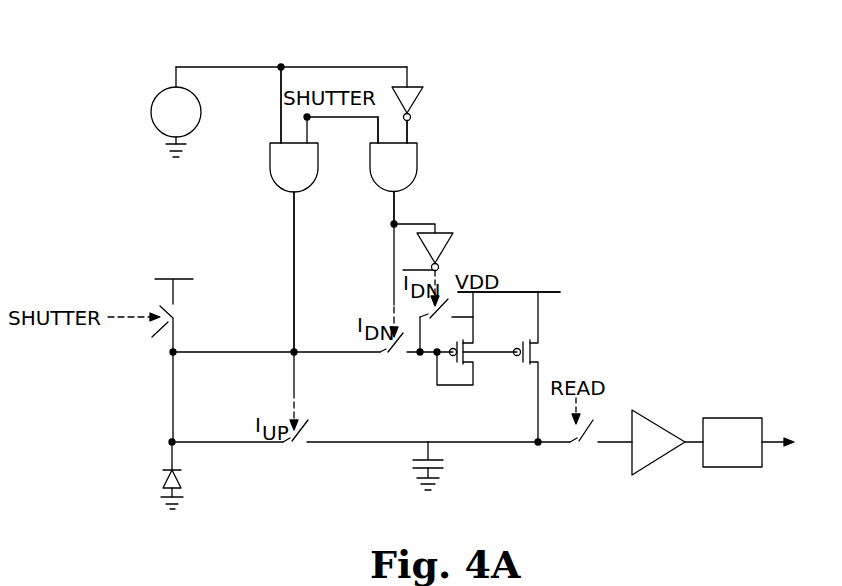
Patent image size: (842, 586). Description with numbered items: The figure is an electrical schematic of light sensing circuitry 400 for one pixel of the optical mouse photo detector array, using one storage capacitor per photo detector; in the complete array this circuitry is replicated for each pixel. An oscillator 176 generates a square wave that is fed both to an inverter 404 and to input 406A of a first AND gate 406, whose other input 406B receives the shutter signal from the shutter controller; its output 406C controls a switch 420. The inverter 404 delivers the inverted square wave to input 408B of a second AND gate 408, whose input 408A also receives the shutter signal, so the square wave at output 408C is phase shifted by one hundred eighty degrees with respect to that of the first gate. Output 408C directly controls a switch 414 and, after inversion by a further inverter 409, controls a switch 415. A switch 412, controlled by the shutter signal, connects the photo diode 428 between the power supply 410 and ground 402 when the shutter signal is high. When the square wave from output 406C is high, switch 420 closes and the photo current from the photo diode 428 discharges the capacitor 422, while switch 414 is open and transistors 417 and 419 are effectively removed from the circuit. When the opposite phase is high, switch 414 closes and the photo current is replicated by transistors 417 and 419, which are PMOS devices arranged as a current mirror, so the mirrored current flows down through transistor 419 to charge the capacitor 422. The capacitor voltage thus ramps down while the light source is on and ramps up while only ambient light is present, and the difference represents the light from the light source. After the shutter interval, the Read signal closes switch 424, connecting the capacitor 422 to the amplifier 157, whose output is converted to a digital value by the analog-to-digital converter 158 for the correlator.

The light sensing circuitry 400 is at (228, 34).
The oscillator 176 is at (154, 94).
The ground 402 is at (172, 156).
The inverter 404 is at (418, 86).
The AND gate 406 is at (306, 190).
The input of AND gate 406 406A is at (279, 139).
The input of AND gate 406 406B is at (308, 140).
The output of AND gate 406 406C is at (292, 195).
The AND gate 408 is at (418, 165).
The input of AND gate 408 408A is at (370, 142).
The input of AND gate 408 408B is at (413, 142).
The output of AND gate 408 408C is at (398, 196).
The inverter 409 is at (452, 243).
The power supply (VDD) 410 is at (160, 279).
The switch 412 is at (151, 374).
The switch 414 is at (393, 356).
The switch 415 is at (433, 312).
The transistor 417 is at (466, 342).
The transistor 419 is at (539, 346).
The switch 420 is at (300, 445).
The capacitor 422 is at (416, 477).
The switch 424 is at (585, 444).
The photo detector 428 is at (162, 478).
The amplifier 157 is at (660, 425).
The analog-to-digital converter 158 is at (735, 418).